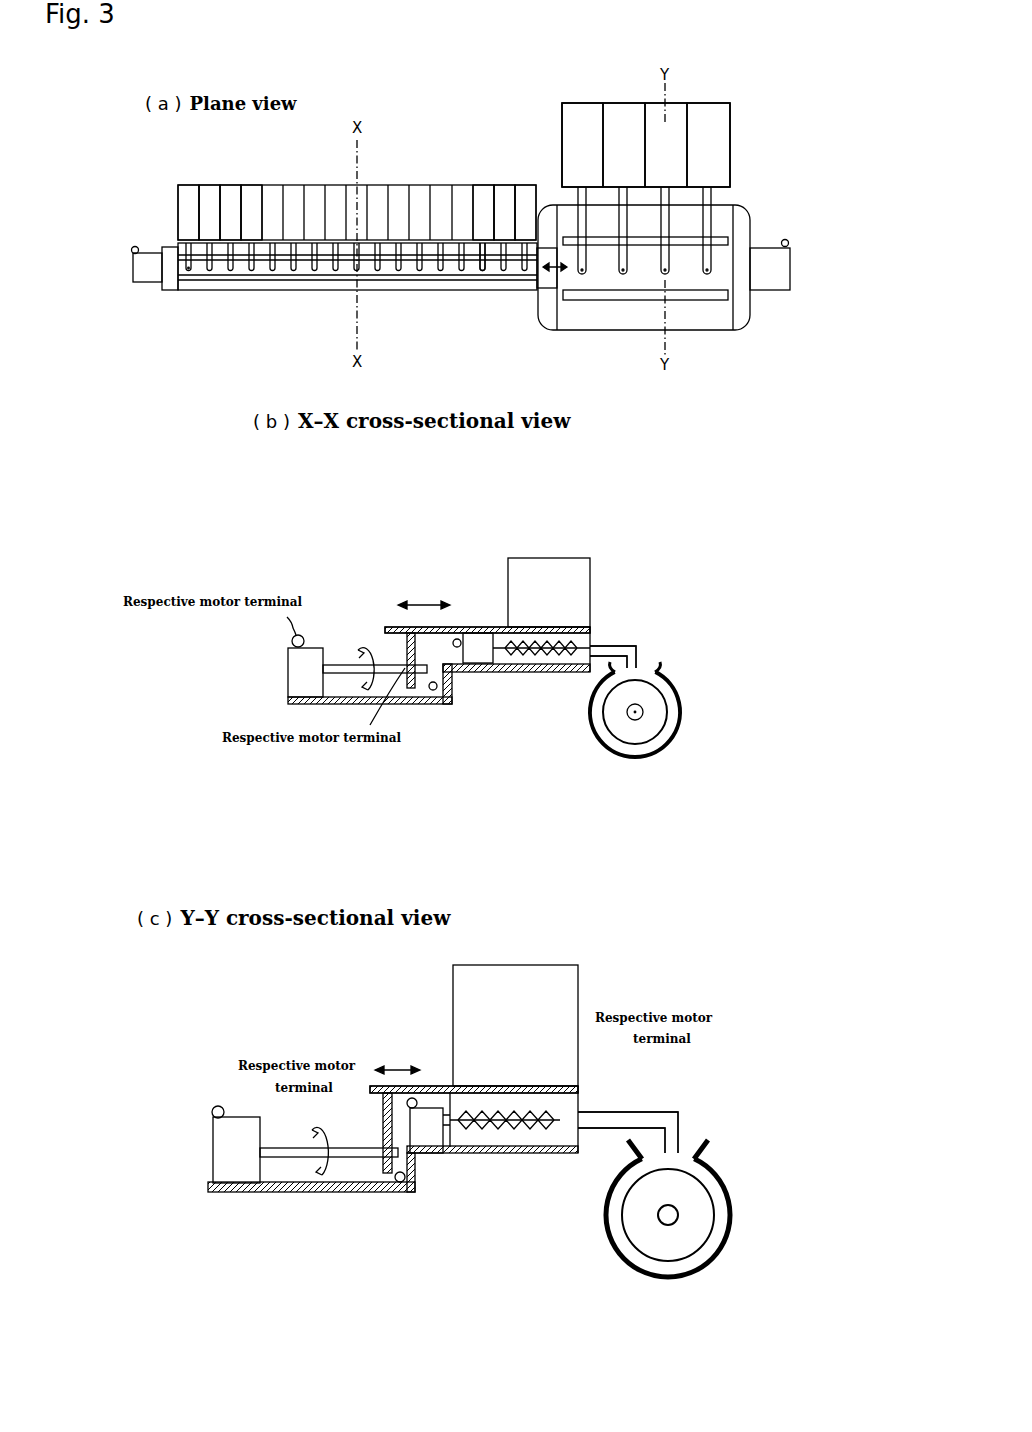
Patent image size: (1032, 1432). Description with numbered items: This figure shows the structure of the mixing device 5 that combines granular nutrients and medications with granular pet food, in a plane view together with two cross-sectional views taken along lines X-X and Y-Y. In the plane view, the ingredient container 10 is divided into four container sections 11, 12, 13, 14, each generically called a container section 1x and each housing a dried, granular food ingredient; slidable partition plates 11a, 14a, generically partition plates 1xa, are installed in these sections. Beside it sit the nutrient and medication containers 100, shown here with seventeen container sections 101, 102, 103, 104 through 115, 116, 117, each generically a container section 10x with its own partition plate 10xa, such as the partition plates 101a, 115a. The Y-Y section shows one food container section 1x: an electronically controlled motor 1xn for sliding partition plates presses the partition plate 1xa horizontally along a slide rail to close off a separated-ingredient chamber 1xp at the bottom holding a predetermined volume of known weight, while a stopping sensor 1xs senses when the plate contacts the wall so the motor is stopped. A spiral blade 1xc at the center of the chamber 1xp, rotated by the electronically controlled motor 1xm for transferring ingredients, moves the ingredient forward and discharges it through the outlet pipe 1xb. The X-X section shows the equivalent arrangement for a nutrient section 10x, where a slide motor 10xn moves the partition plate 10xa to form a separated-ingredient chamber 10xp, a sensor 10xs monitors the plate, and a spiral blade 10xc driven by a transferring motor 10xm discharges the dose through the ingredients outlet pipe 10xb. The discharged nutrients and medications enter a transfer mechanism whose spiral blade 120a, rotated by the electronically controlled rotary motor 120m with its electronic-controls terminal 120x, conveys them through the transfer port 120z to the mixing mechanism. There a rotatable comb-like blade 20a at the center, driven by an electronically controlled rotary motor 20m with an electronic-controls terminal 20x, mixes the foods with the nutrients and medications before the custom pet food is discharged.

The mixing device 5 is at (740, 128).
The ingredient container 10 is at (562, 120).
The container section 11 is at (582, 145).
The container section 12 is at (624, 145).
The container section 13 is at (666, 145).
The container section 14 is at (708, 145).
The partition plate 11a is at (580, 275).
The partition plate 14a is at (707, 275).
The electronically controlled rotary motor 20m is at (762, 290).
The electronic-controls terminal 20x is at (784, 239).
The comb-like blade 20a is at (695, 1218).
The nutrient and medication containers 100 is at (213, 185).
The container section 101 is at (192, 212).
The container section 102 is at (213, 212).
The container section 103 is at (234, 212).
The container section 104 is at (255, 212).
The container section 115 is at (487, 212).
The container section 116 is at (508, 212).
The container section 117 is at (529, 212).
The partition plate 101a is at (187, 273).
The partition plate 115a is at (474, 278).
The electronically controlled rotary motor 120m is at (148, 285).
The electronic-controls terminal 120x is at (133, 247).
The nutrients/medications-transfer port 120z is at (543, 273).
The spiral blade 120a is at (650, 713).
The container section 10x is at (562, 558).
The partition plate 10xa is at (390, 627).
The separated-ingredient chamber 10xp is at (487, 548).
The ingredients outlet pipe 10xb is at (618, 645).
The electronically controlled motor for sliding partition plates 10xn is at (288, 683).
The stopping sensor 10xs is at (432, 700).
The spiral blade 10xc is at (540, 665).
The electronically controlled motor for transferring ingredients 10xm is at (480, 672).
The container section 1x is at (535, 965).
The partition plate 1xa is at (440, 1086).
The separated-ingredient chamber 1xp is at (583, 1107).
The outlet pipe 1xb is at (665, 1112).
The electronically controlled motor for sliding partition plates 1xn is at (228, 1115).
The stopping sensor 1xs is at (400, 1192).
The spiral blade 1xc is at (490, 1137).
The electronically controlled motor for transferring ingredients 1xm is at (427, 1157).